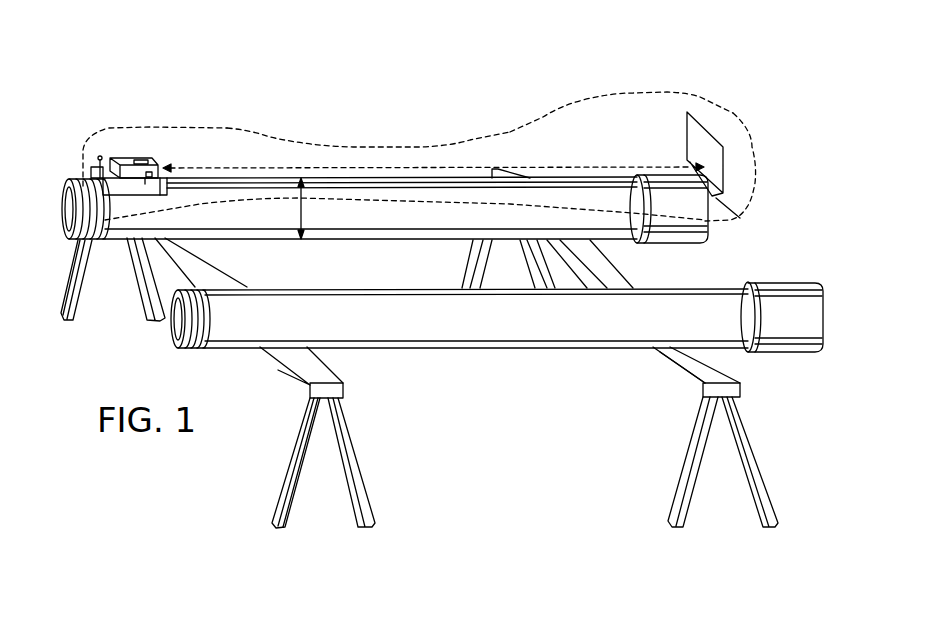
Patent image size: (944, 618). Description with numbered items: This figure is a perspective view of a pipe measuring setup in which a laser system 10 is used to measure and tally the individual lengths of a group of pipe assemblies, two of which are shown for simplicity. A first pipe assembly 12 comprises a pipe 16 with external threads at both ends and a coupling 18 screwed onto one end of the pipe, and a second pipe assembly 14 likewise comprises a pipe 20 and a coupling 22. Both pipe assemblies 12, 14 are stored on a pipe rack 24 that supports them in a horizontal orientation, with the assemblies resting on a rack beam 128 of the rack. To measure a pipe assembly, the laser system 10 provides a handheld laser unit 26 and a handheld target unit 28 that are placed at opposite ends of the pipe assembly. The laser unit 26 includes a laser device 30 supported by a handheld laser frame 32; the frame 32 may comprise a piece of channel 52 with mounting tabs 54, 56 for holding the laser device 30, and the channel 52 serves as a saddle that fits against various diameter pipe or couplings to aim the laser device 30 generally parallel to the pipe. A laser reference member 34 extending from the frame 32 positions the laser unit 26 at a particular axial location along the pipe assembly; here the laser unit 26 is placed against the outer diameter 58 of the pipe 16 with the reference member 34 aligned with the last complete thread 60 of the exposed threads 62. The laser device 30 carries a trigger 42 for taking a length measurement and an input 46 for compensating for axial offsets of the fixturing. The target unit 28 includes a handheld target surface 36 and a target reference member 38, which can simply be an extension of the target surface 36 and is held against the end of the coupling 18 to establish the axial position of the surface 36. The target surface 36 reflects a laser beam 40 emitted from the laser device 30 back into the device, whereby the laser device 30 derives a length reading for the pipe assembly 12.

The laser system 10 is at (543, 117).
The pipe assembly 12 is at (433, 178).
The pipe assembly 14 is at (373, 290).
The pipe 16 is at (453, 178).
The coupling 18 is at (678, 242).
The pipe 20 is at (473, 347).
The coupling 22 is at (775, 352).
The pipe rack 24 is at (292, 442).
The handheld laser unit 26 is at (120, 144).
The handheld target unit 28 is at (712, 121).
The laser device 30 is at (153, 157).
The handheld laser frame 32 is at (150, 182).
The laser reference member 34 is at (90, 168).
The handheld target surface 36 is at (713, 158).
The target reference member 38 is at (716, 198).
The laser beam 40 is at (262, 128).
The trigger 42 is at (137, 158).
The input 46 is at (148, 160).
The channel 52 is at (133, 197).
The mounting tab 54 is at (165, 196).
The mounting tab 56 is at (100, 157).
The outer diameter 58 is at (305, 208).
The last complete thread 60 is at (110, 218).
The exposed threads 62 is at (88, 263).
The lower rack beam 128 is at (363, 458).